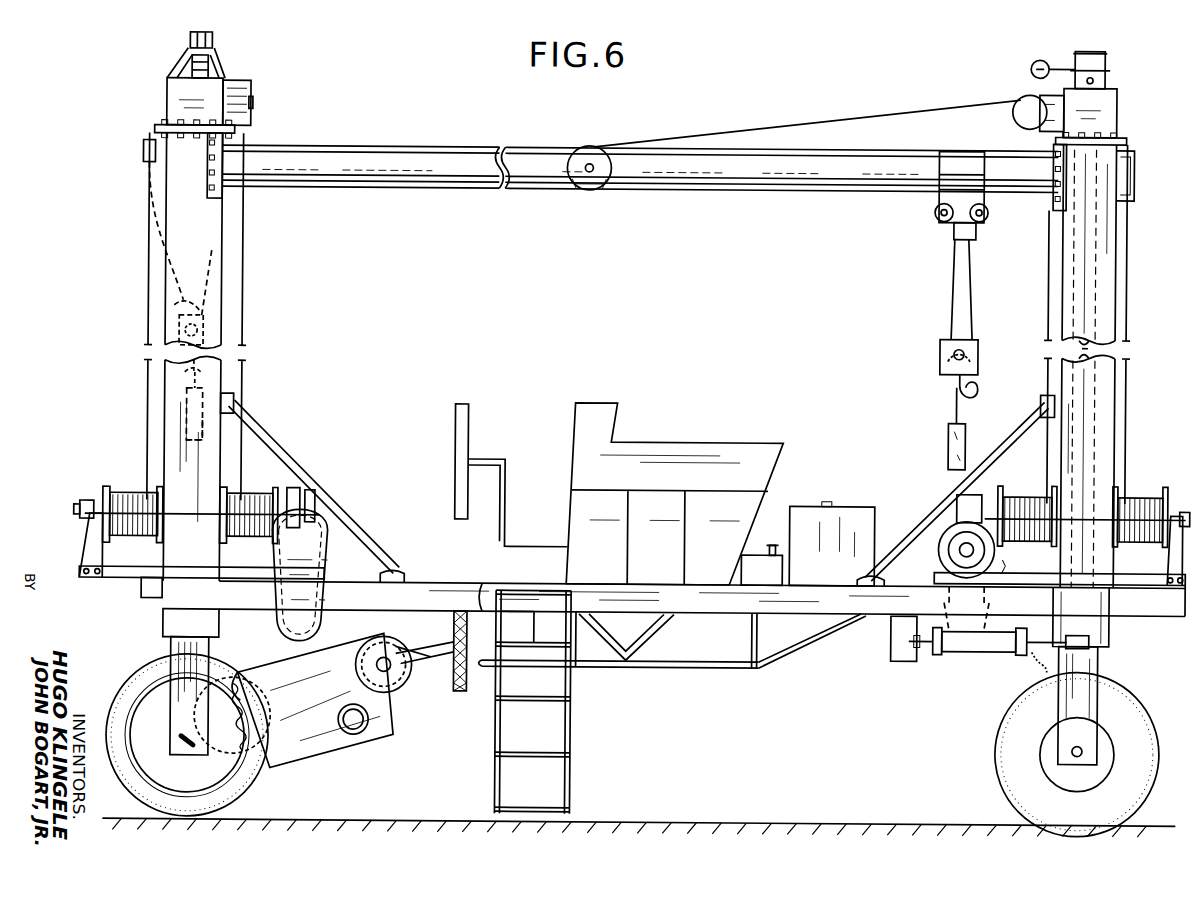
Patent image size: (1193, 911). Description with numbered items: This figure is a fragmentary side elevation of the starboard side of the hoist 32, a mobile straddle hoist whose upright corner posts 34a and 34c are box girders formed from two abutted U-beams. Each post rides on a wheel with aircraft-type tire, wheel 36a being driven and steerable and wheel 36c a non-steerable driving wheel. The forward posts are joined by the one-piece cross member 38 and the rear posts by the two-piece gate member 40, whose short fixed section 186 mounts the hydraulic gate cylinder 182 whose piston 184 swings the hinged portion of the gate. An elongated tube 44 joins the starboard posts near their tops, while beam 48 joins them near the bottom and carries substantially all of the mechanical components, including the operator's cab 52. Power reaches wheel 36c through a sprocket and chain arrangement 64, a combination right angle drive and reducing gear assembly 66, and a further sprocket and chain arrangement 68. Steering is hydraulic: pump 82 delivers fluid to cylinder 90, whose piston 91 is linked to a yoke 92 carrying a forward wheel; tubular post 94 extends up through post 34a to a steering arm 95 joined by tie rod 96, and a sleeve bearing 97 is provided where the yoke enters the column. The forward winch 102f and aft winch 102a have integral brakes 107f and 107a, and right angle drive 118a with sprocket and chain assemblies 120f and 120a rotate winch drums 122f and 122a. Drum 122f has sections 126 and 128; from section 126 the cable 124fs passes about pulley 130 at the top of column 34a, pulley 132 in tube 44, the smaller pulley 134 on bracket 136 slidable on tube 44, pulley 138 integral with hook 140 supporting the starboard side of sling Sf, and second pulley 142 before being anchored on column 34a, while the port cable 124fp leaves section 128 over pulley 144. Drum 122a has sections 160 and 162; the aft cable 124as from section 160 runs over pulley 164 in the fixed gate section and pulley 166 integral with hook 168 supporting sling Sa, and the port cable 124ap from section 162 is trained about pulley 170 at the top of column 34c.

The hoist 32 is at (88, 323).
The corner post 34a is at (1102, 228).
The corner post 34c is at (164, 623).
The wheel and aircraft type tire 36a is at (1000, 773).
The wheel and aircraft type tire 36c is at (237, 793).
The cross member 38 is at (1105, 103).
The gate member 40 is at (187, 61).
The elongated tube 44 is at (416, 148).
The beam 48 is at (710, 612).
The operator's cab 52 is at (560, 441).
The sprocket and chain arrangement 64 is at (462, 693).
The right angle drive and reducing gear assembly 66 is at (430, 692).
The sprocket and chain arrangement 68 is at (153, 693).
The pump 82 is at (755, 554).
The cylinder 90 is at (985, 651).
The piston 91 is at (1032, 653).
The yoke 92 is at (1088, 686).
The tubular post 94 is at (1088, 353).
The steering arm 95 is at (1071, 61).
The tie rod 96 is at (1028, 66).
The sleeve bearing 97 is at (1100, 629).
The aft winch 102a is at (175, 513).
The forward winch 102f is at (1087, 512).
The aft brake 107a is at (332, 531).
The fore brake 107f is at (956, 554).
The right angle drive 118a is at (278, 643).
The sprocket and chain assembly 120a is at (333, 568).
The sprocket and chain assembly 120f is at (942, 593).
The winch drum 122a is at (285, 482).
The winch drum 122f is at (1020, 558).
The port side of aft cable 124ap is at (148, 411).
The aft cable 124as is at (143, 211).
The port side of cable 124fp is at (1125, 398).
The cable 124fs is at (775, 122).
The winch drum section 126 is at (1030, 497).
The winch drum section 128 is at (1150, 538).
The pulley 130 is at (1012, 110).
The pulley 132 is at (584, 146).
The smaller pulley 134 is at (935, 213).
The bracket 136 is at (953, 149).
The pulley 138 is at (939, 349).
The hook 140 is at (948, 393).
The second pulley 142 is at (986, 210).
The pulley 144 is at (1126, 173).
The winch drum section 160 is at (262, 544).
The winch drum section 162 is at (127, 542).
The pulley 164 is at (245, 96).
The pulley 166 is at (178, 294).
The hook 168 is at (188, 374).
The pulley 170 is at (152, 134).
The hydraulic gate cylinder 182 is at (208, 71).
The piston 184 is at (185, 47).
The fixed section 186 is at (186, 97).
The aft sling Sa is at (184, 429).
The forward sling Sf is at (948, 443).